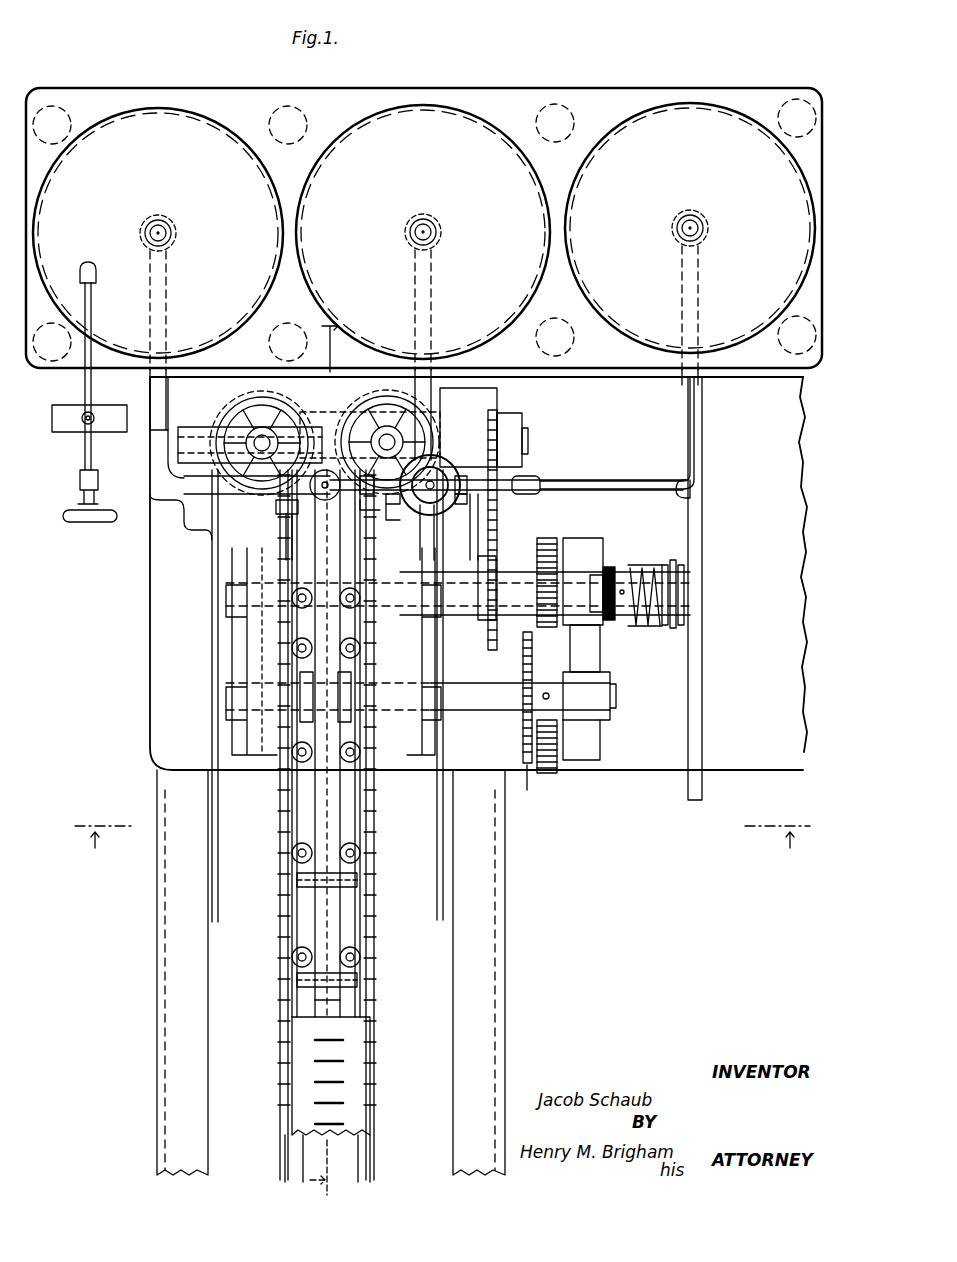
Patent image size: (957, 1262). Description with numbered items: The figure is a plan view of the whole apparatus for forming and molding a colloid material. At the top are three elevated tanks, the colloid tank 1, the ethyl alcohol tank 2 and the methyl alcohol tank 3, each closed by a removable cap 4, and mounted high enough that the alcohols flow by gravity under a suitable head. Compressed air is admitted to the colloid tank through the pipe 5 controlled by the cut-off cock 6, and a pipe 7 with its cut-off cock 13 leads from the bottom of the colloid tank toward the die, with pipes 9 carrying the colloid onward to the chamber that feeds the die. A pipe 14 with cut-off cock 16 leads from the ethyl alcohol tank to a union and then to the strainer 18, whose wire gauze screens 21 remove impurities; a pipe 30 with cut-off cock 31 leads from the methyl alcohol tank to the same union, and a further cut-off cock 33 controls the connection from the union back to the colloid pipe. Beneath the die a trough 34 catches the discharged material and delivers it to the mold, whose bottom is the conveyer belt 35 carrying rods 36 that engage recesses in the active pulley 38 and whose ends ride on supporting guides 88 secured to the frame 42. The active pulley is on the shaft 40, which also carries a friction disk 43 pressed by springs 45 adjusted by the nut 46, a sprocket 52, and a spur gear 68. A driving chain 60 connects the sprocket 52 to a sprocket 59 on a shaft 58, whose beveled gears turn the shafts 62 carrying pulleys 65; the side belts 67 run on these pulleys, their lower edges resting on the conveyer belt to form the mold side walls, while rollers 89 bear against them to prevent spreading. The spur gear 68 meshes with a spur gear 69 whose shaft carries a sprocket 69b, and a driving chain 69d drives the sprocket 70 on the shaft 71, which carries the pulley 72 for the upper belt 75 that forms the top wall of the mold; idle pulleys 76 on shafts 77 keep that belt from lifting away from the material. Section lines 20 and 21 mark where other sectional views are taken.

The tank 1 is at (158, 233).
The tank 2 is at (423, 232).
The tank 3 is at (690, 228).
The cap 4 is at (722, 229).
The pipe 5 is at (86, 392).
The cut-off cock 6 is at (78, 493).
The pipe 7 is at (180, 490).
The pipes 9 is at (410, 500).
The cut-off cock 13 is at (298, 514).
The pipe 14 is at (483, 424).
The cut-off cock 16 is at (400, 512).
The strainer 18 is at (462, 505).
The section line 20 is at (335, 759).
The wire gauze screens 21 is at (801, 823).
The pipe 30 is at (650, 462).
The cut-off cock 31 is at (472, 505).
The cut-off cock 33 is at (372, 500).
The trough 34 is at (440, 548).
The conveyer belt 35 is at (352, 1060).
The rods 36 is at (374, 1100).
The active pulley 38 is at (410, 642).
The shaft 40 is at (500, 598).
The frame 42 is at (600, 770).
The friction disk 43 is at (702, 665).
The springs 45 is at (648, 625).
The nut 46 is at (618, 570).
The sprocket 52 is at (498, 580).
The shaft 58 is at (528, 440).
The sprocket 59 is at (500, 438).
The driving chain 60 is at (535, 500).
The shafts 62 is at (376, 420).
The pulleys 65 is at (384, 394).
The belts 67 is at (355, 888).
The spur gear 68 is at (548, 538).
The spur gear 69 is at (548, 775).
The sprocket 69b is at (523, 720).
The driving chain 69d is at (527, 778).
The sprocket 70 is at (560, 712).
The shaft 71 is at (418, 696).
The pulley 72 is at (278, 660).
The belt 75 is at (330, 925).
The idle pulleys 76 is at (342, 996).
The shafts 77 is at (297, 980).
The supporting guides 88 is at (392, 1143).
The rollers 89 is at (396, 963).